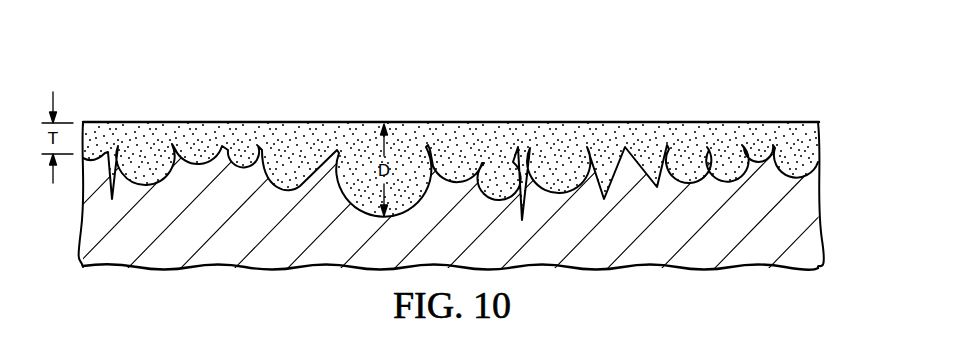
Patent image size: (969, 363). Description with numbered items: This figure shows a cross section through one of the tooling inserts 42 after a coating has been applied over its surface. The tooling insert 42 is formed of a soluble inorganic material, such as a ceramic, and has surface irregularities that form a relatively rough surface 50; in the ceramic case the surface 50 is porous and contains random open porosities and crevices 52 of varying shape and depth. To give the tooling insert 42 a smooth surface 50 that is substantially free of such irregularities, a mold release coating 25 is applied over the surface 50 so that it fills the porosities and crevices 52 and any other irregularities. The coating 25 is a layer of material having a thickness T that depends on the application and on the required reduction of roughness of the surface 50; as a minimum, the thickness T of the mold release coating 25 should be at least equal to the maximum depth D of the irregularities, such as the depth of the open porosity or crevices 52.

The surface 50 is at (283, 104).
The porosities and crevices 52 is at (411, 155).
The mold release coating 25 is at (645, 130).
The tooling insert 42 is at (81, 229).